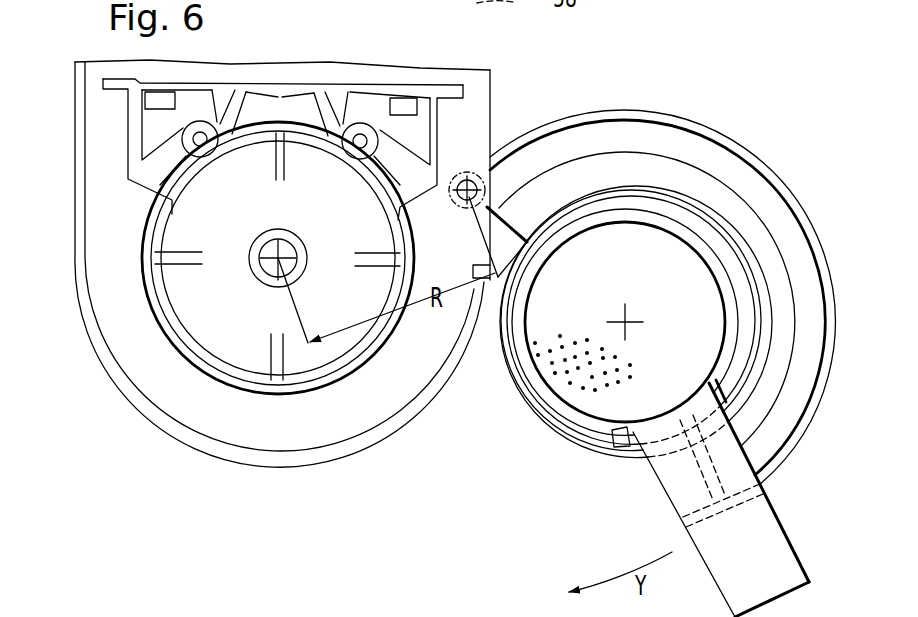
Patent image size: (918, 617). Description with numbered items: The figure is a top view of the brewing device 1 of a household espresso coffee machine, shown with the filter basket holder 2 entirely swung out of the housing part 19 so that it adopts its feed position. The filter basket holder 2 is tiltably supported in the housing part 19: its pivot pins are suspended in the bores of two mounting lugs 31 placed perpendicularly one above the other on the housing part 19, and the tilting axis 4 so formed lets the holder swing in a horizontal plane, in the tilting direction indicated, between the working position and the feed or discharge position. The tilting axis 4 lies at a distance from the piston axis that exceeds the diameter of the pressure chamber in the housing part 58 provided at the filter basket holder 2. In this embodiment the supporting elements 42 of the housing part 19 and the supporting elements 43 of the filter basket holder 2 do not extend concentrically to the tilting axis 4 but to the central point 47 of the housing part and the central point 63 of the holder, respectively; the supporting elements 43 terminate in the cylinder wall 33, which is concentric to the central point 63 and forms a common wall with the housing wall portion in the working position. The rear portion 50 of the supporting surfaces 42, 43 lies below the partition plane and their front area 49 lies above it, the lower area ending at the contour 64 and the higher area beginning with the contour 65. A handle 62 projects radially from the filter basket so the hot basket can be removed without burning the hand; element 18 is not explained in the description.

The brewing device 1 is at (514, 112).
The filter basket holder 2 is at (710, 127).
The tilting axis 4 is at (463, 207).
The perforated intake area 18 is at (583, 387).
The housing part 19 is at (74, 230).
The mounting lug 31 is at (466, 172).
The cylinder wall 33 is at (759, 167).
The supporting elements 42 is at (170, 223).
The supporting elements 43 is at (755, 280).
The central point 47 is at (266, 282).
The front area 49 is at (238, 407).
The rear portion 50 is at (263, 139).
The housing part 58 is at (613, 430).
The handle 62 is at (770, 555).
The central point 63 is at (633, 318).
The contour 64 is at (185, 243).
The contour 65 is at (177, 278).